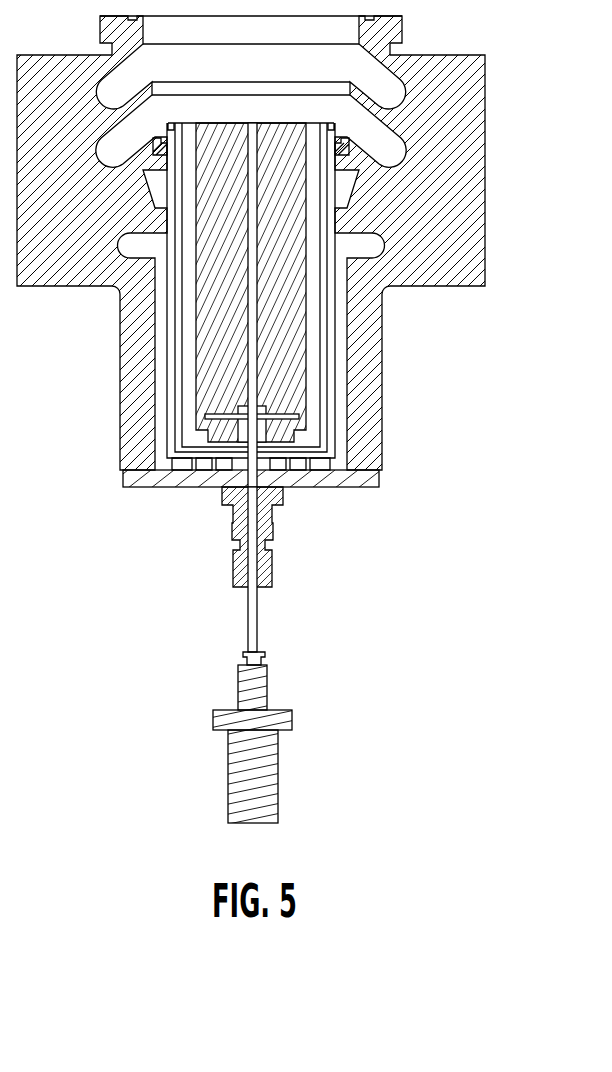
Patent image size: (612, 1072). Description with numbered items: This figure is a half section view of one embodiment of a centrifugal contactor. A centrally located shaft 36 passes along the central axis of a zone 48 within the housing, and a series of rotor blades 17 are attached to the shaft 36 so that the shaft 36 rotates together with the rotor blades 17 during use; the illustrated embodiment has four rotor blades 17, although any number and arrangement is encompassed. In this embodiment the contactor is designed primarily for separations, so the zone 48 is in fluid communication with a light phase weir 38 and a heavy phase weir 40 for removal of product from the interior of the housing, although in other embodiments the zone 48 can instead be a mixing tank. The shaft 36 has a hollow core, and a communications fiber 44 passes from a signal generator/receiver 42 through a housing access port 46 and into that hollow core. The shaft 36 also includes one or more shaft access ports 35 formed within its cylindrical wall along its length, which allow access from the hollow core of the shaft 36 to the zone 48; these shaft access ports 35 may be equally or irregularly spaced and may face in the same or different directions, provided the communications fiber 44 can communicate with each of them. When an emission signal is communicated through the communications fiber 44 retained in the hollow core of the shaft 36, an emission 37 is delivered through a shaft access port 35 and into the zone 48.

The rotor blades 17 is at (290, 375).
The shaft access ports 35 is at (257, 133).
The shaft 36 is at (255, 270).
The emission 37 is at (333, 153).
The light phase weir 38 is at (387, 168).
The heavy phase weir 40 is at (407, 101).
The signal generator/receiver 42 is at (278, 770).
The communications fiber 44 is at (257, 633).
The housing access port 46 is at (280, 543).
The zone 48 is at (210, 257).